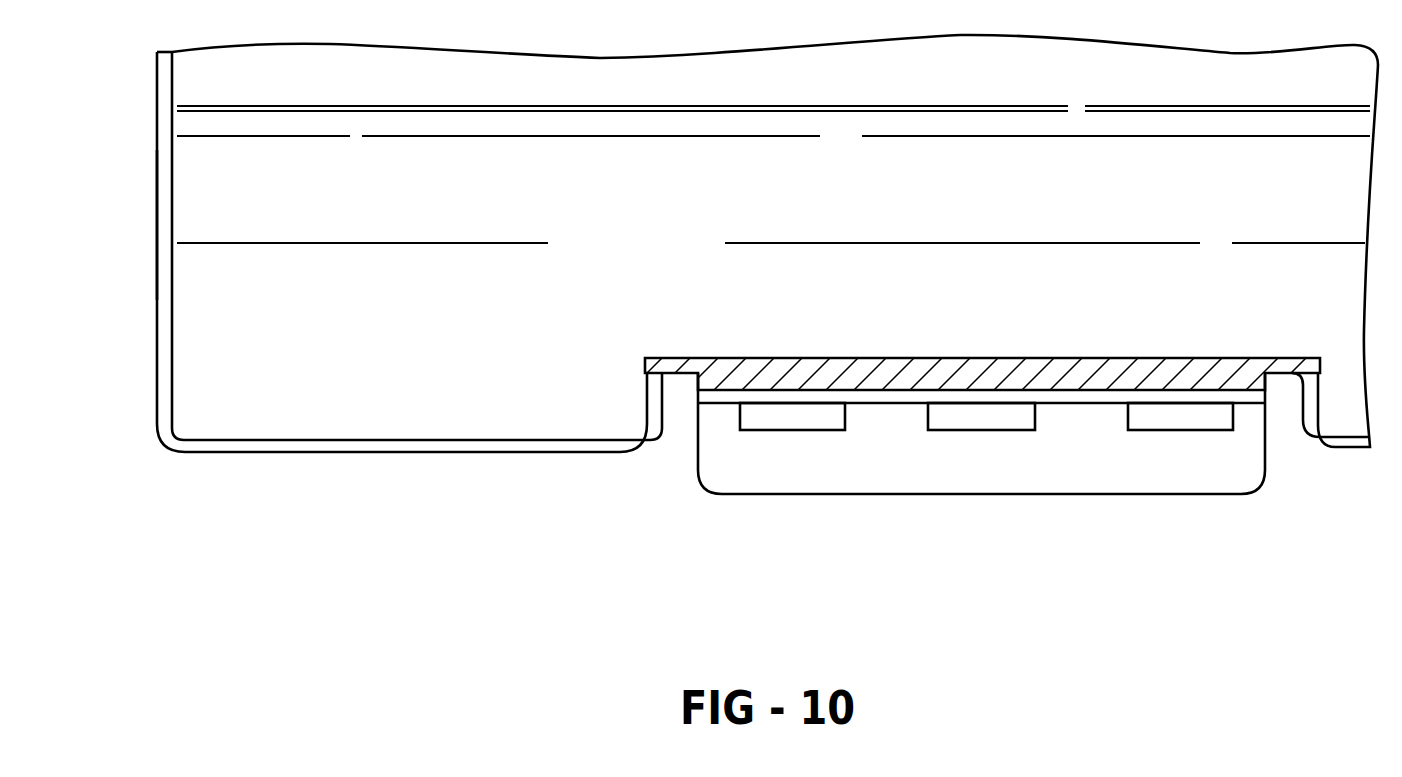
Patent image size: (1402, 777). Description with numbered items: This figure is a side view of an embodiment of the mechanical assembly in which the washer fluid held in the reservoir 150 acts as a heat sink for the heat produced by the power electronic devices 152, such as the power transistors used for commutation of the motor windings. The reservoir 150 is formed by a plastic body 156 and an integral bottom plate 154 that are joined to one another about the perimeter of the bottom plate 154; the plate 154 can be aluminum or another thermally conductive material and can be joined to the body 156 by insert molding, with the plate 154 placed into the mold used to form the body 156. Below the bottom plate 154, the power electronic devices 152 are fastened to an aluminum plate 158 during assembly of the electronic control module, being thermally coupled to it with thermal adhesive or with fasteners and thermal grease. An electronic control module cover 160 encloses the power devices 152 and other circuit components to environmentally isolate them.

The reservoir 150 is at (370, 458).
The power electronic devices 152 is at (805, 418).
The bottom plate 154 is at (773, 368).
The plastic body 156 is at (162, 270).
The aluminum plate 158 is at (1072, 398).
The electronic control module cover 160 is at (1060, 495).